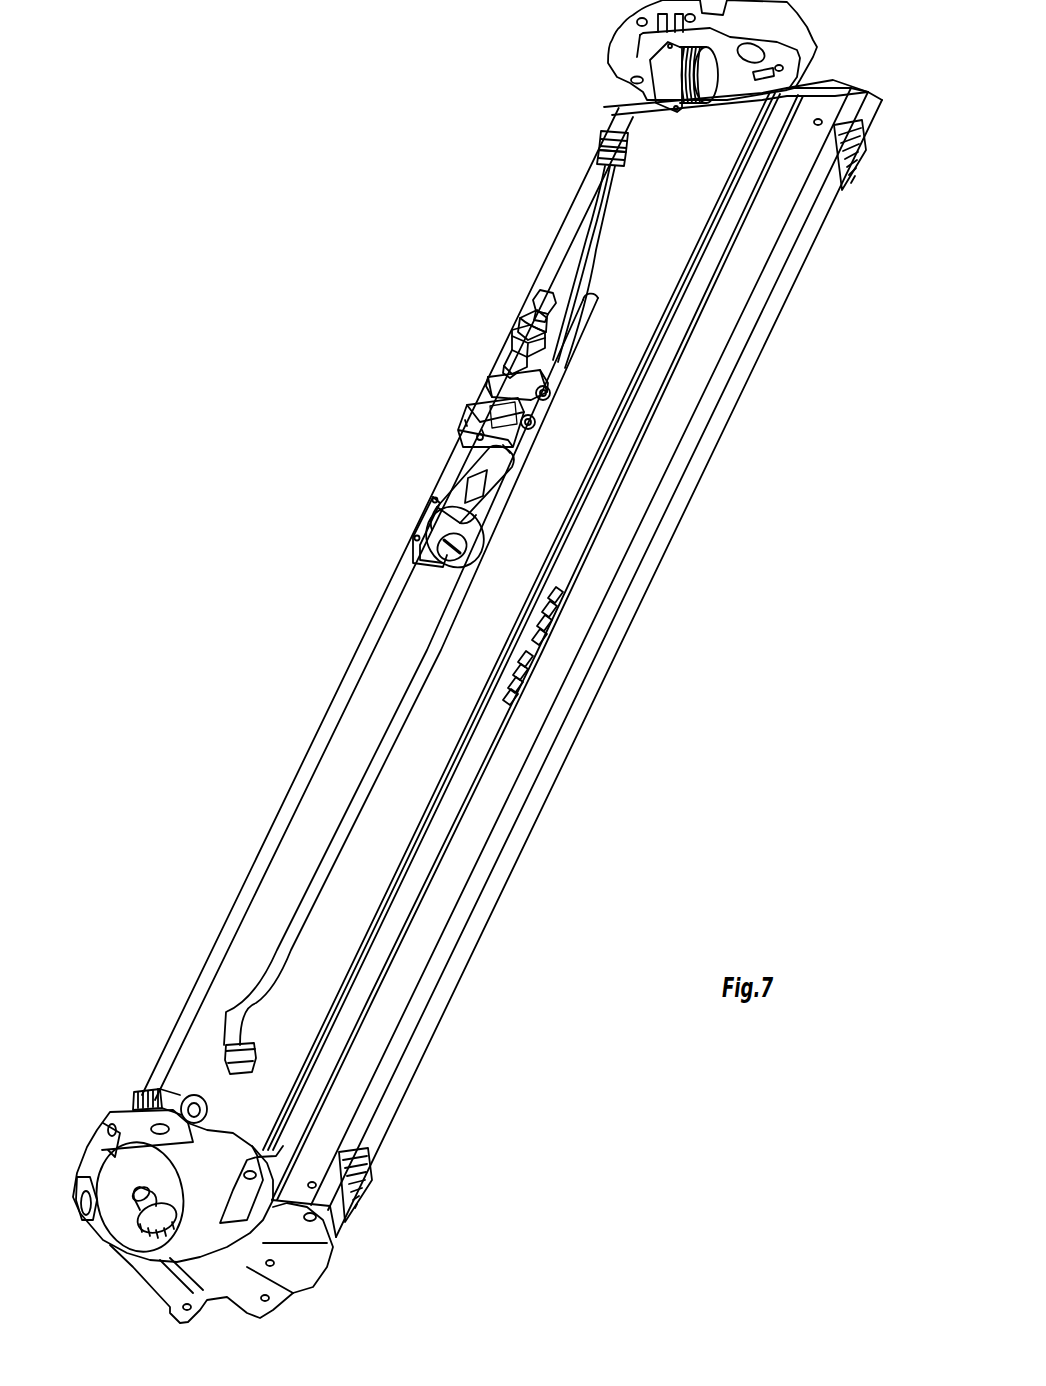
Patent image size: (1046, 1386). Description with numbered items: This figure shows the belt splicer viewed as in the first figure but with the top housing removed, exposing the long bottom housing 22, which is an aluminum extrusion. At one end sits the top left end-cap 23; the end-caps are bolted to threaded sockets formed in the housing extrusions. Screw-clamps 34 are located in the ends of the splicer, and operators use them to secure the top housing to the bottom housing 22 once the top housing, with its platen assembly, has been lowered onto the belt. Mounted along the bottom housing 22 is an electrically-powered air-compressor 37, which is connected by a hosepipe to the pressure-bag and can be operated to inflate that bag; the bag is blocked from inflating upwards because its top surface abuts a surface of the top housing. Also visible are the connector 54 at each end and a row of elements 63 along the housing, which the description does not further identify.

The bottom housing 22 is at (425, 1037).
The top left end-cap 23 is at (86, 1160).
The screw-clamps 34 is at (120, 1242).
The electrically-powered air-compressor 37 is at (468, 487).
The connector 54 is at (640, 90).
The sensor tabs 63 is at (550, 603).